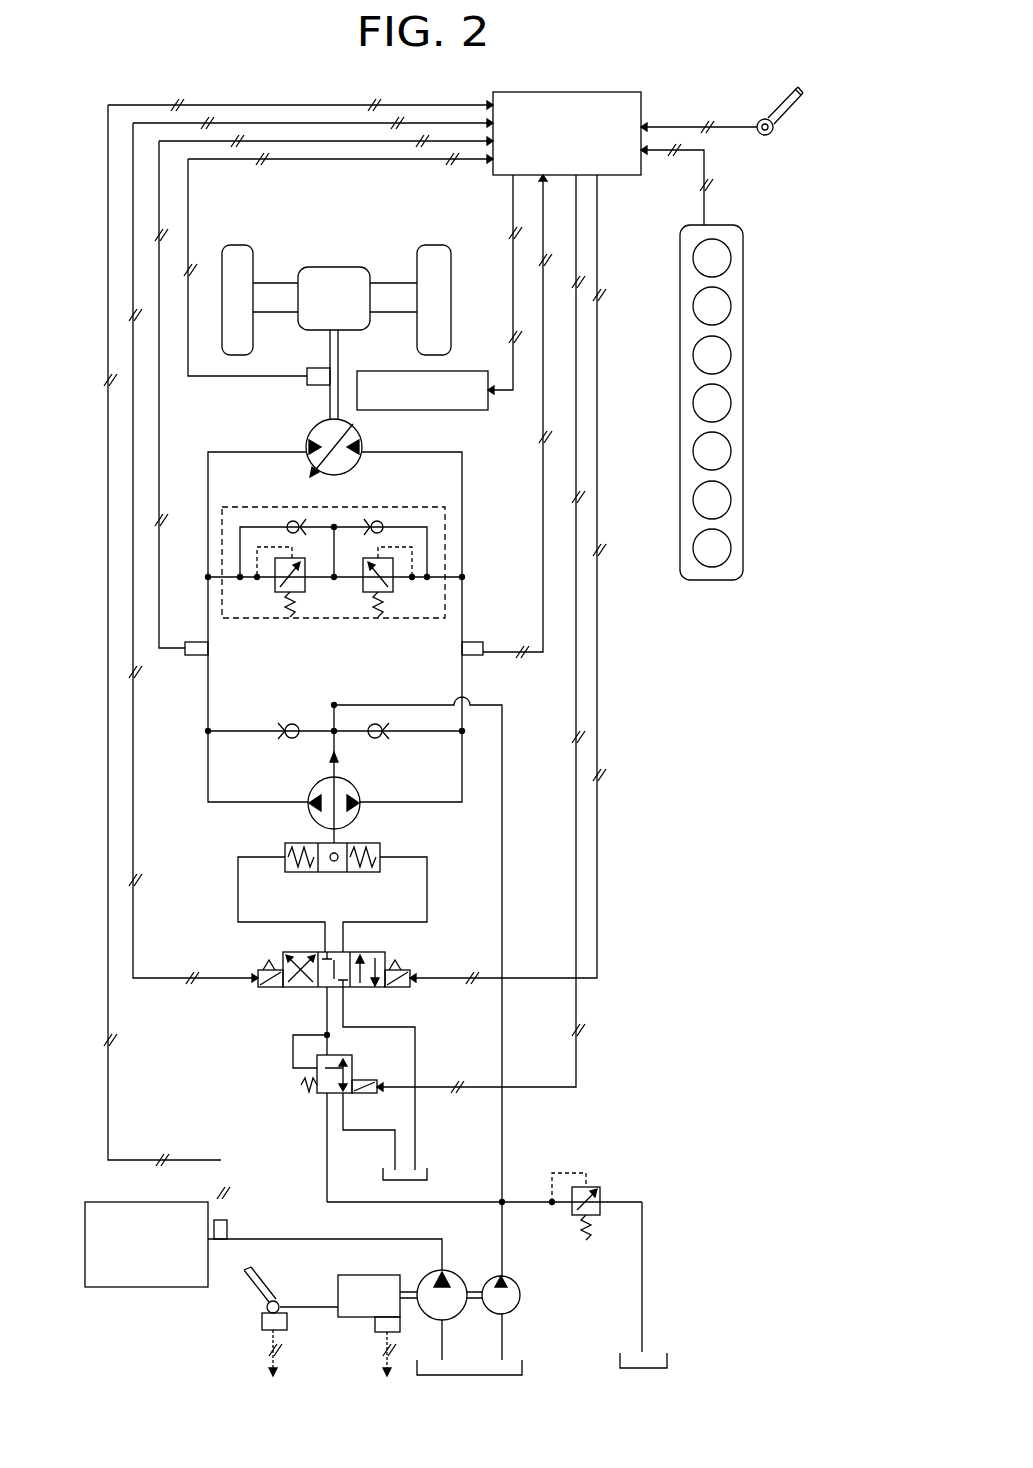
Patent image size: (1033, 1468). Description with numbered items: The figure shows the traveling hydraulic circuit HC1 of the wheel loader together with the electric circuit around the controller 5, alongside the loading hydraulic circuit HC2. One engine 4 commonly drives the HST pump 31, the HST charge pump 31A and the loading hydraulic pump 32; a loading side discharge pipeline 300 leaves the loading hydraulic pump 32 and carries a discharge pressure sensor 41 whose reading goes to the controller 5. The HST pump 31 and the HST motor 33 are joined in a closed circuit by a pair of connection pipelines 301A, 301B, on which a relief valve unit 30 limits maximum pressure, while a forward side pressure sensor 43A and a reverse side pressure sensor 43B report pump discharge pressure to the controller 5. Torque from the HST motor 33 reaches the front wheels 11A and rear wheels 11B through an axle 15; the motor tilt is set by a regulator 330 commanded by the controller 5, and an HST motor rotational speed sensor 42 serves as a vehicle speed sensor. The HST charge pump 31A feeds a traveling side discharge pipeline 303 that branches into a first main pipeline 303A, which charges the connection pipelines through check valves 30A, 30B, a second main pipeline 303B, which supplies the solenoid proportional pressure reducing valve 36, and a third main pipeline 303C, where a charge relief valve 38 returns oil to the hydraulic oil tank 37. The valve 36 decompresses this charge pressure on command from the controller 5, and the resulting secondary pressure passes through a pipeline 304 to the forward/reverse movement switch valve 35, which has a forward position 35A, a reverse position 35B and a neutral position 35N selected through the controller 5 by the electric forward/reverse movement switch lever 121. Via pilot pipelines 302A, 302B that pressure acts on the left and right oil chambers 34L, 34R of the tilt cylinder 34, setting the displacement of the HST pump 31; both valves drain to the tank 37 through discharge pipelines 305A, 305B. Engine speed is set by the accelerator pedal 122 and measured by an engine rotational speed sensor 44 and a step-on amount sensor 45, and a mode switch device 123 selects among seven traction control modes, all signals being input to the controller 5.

The controller 5 is at (635, 90).
The electric forward/reverse movement switch lever 121 is at (800, 92).
The mode switch device 123 is at (743, 572).
The front wheels 11A is at (238, 245).
The rear wheels 11B is at (447, 245).
The axle 15 is at (340, 267).
The HST motor rotational speed sensor 42 is at (307, 380).
The regulator 330 is at (455, 411).
The HST motor 33 is at (356, 464).
The relief valve unit 30 is at (276, 506).
The connection pipeline 301A is at (208, 520).
The connection pipeline 301B is at (462, 520).
The forward side pressure sensor 43A is at (194, 663).
The reverse side pressure sensor 43B is at (484, 658).
The check valve 30A is at (282, 736).
The check valve 30B is at (386, 733).
The HST pump 31 is at (310, 788).
The tilt cylinder 34 is at (340, 872).
The left oil chamber 34L is at (290, 843).
The right oil chamber 34R is at (380, 843).
The pilot pipeline 302A is at (238, 910).
The pilot pipeline 302B is at (427, 910).
The forward/reverse movement switch valve 35 is at (253, 997).
The forward position 35A is at (380, 952).
The reverse position 35B is at (286, 952).
The neutral position 35N is at (318, 985).
The pipeline 304 is at (325, 1005).
The solenoid proportional pressure reducing valve 36 is at (317, 1095).
The discharge pipeline 305A is at (415, 1115).
The discharge pipeline 305B is at (352, 1134).
The second main pipeline 303B is at (327, 1146).
The first main pipeline 303A is at (505, 1137).
The traveling side discharge pipeline 303 is at (500, 1206).
The third main pipeline 303C is at (537, 1208).
The charge relief valve 38 is at (600, 1195).
The loading side discharge pipeline 300 is at (290, 1239).
The discharge pressure sensor 41 is at (227, 1222).
The loading hydraulic circuit HC2 is at (86, 1214).
The loading hydraulic pump 32 is at (462, 1278).
The HST charge pump 31A is at (520, 1295).
The engine 4 is at (354, 1318).
The engine rotational speed sensor 44 is at (381, 1333).
The accelerator pedal 122 is at (252, 1290).
The step-on amount sensor 45 is at (263, 1327).
The hydraulic oil tank 37 is at (430, 1180).
The traveling hydraulic circuit HC1 is at (656, 1002).